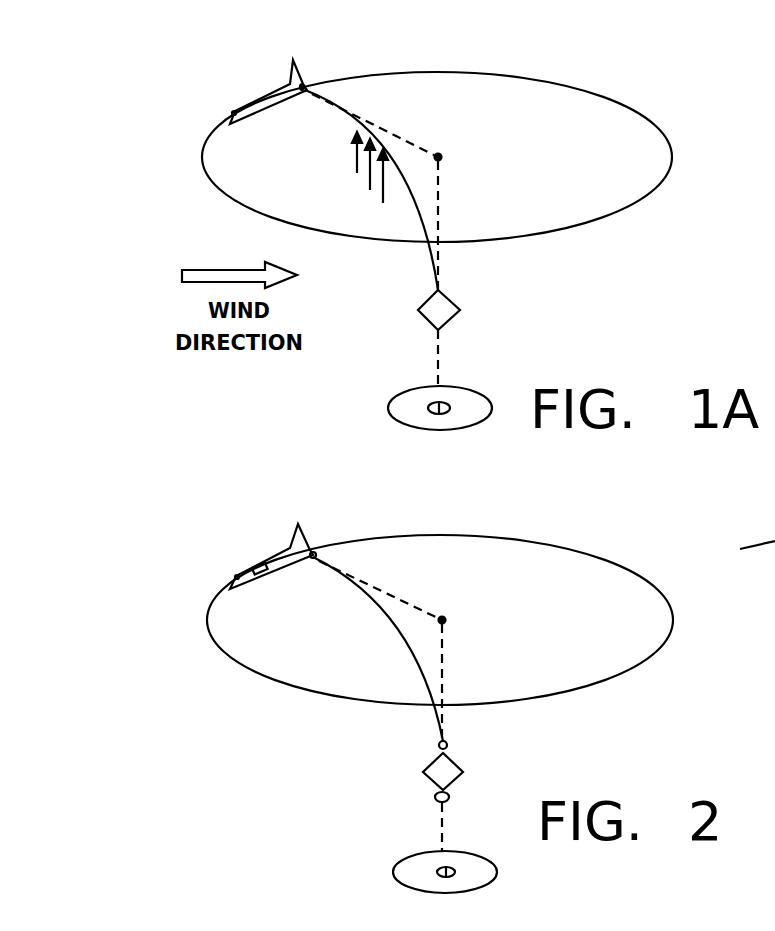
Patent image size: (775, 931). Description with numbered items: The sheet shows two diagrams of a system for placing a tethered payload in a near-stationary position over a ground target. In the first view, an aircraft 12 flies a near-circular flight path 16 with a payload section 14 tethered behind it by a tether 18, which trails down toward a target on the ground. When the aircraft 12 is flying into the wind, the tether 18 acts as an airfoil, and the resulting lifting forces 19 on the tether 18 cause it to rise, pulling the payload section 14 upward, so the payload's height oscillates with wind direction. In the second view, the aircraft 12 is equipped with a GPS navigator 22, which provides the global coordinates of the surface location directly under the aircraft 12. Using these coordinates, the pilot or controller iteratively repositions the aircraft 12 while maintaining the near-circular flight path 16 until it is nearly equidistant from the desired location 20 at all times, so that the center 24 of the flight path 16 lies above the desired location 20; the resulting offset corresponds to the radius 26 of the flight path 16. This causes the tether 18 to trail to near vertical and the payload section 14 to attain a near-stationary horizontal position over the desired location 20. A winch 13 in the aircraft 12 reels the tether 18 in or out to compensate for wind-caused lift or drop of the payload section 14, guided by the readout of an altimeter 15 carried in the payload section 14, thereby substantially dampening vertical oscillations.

In FIG. 1A, the aircraft 12 is at (253, 100).
In FIG. 2, the aircraft 12 is at (283, 548).
In FIG. 2, the winch 13 is at (315, 552).
In FIG. 1A, the payload section 14 is at (449, 298).
In FIG. 2, the payload section 14 is at (428, 768).
In FIG. 2, the altimeter 15 is at (450, 797).
In FIG. 1A, the near-circular flight path 16 is at (647, 118).
In FIG. 2, the near-circular flight path 16 is at (650, 585).
In FIG. 1A, the tether 18 is at (418, 197).
In FIG. 2, the tether 18 is at (404, 648).
In FIG. 1A, the lifting forces 19 is at (382, 172).
In FIG. 2, the desired location 20 is at (440, 867).
In FIG. 2, the GPS navigator 22 is at (256, 564).
In FIG. 2, the center 24 is at (447, 618).
In FIG. 2, the radius 26 is at (401, 597).